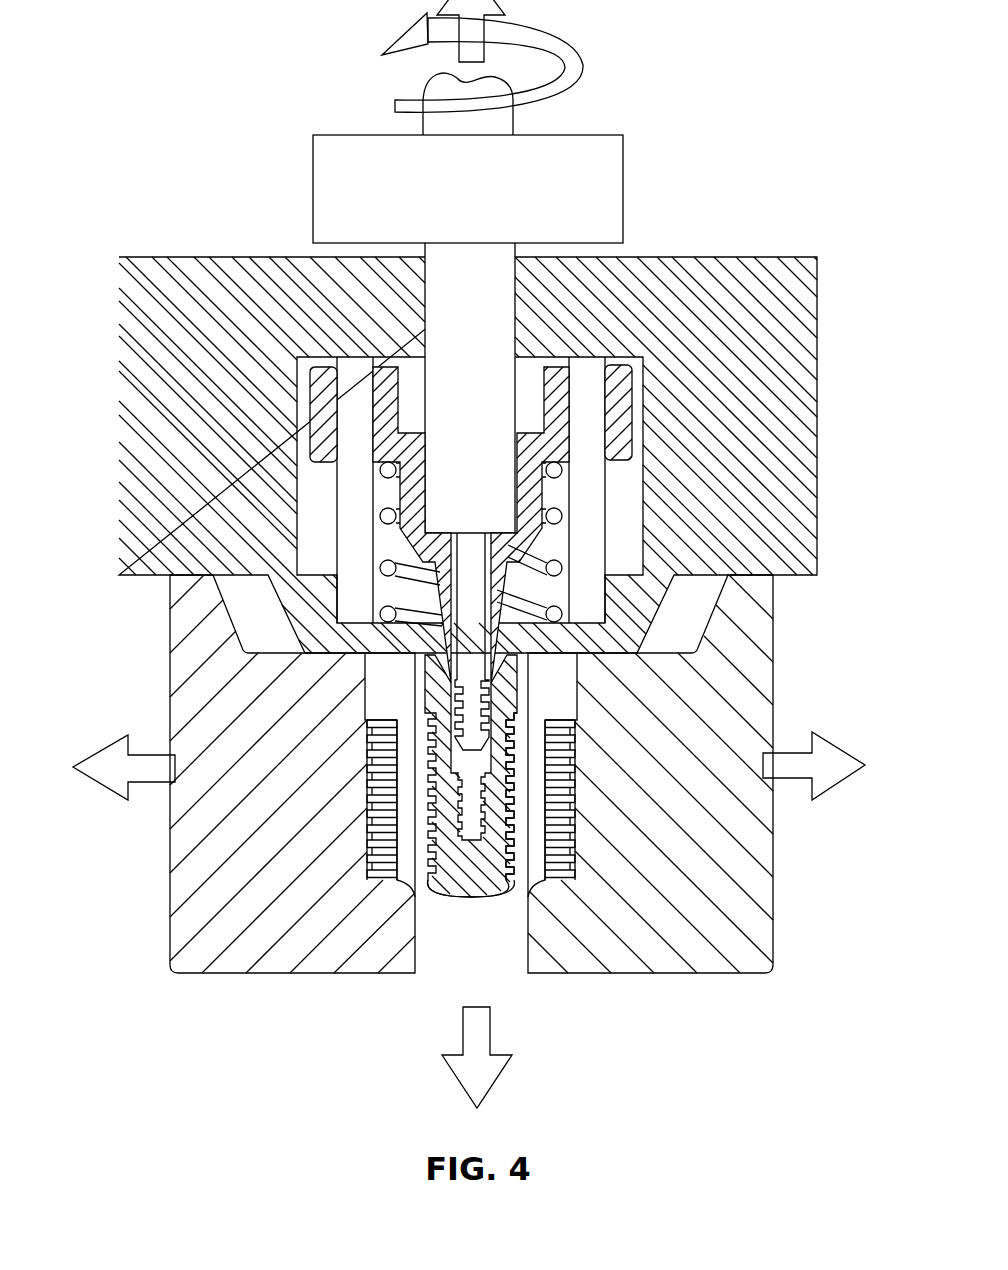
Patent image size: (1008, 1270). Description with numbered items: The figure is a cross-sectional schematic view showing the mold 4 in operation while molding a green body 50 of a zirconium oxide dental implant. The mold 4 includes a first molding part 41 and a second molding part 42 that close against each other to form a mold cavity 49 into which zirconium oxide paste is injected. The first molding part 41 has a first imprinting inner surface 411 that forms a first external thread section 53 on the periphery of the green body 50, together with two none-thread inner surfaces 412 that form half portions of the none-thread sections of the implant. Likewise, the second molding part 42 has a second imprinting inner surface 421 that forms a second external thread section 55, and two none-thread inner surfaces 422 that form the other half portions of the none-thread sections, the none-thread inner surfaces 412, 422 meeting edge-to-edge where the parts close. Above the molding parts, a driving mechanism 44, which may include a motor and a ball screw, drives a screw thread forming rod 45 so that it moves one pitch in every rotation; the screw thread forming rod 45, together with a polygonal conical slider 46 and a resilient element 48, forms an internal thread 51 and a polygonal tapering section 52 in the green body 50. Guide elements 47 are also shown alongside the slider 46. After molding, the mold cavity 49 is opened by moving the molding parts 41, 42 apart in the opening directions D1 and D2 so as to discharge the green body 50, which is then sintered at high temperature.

The mold 4 is at (250, 1036).
The first molding part 41 is at (213, 665).
The second molding part 42 is at (727, 645).
The first imprinting inner surface 411 is at (377, 830).
The none-thread inner surfaces 412 is at (380, 853).
The second imprinting inner surface 421 is at (563, 820).
The none-thread inner surfaces 422 is at (563, 862).
The driving mechanism 44 is at (453, 193).
The screw thread forming rod 45 is at (456, 317).
The polygonal conical slider 46 is at (520, 450).
The guide posts 47 is at (343, 502).
The resilient element 48 is at (393, 514).
The mold cavity 49 is at (505, 895).
The green body 50 is at (480, 870).
The internal thread 51 is at (543, 803).
The polygonal tapering section 52 is at (495, 698).
The first external thread section 53 is at (427, 750).
The second external thread section 55 is at (542, 742).
The opening direction D1 is at (115, 773).
The opening direction D2 is at (828, 762).